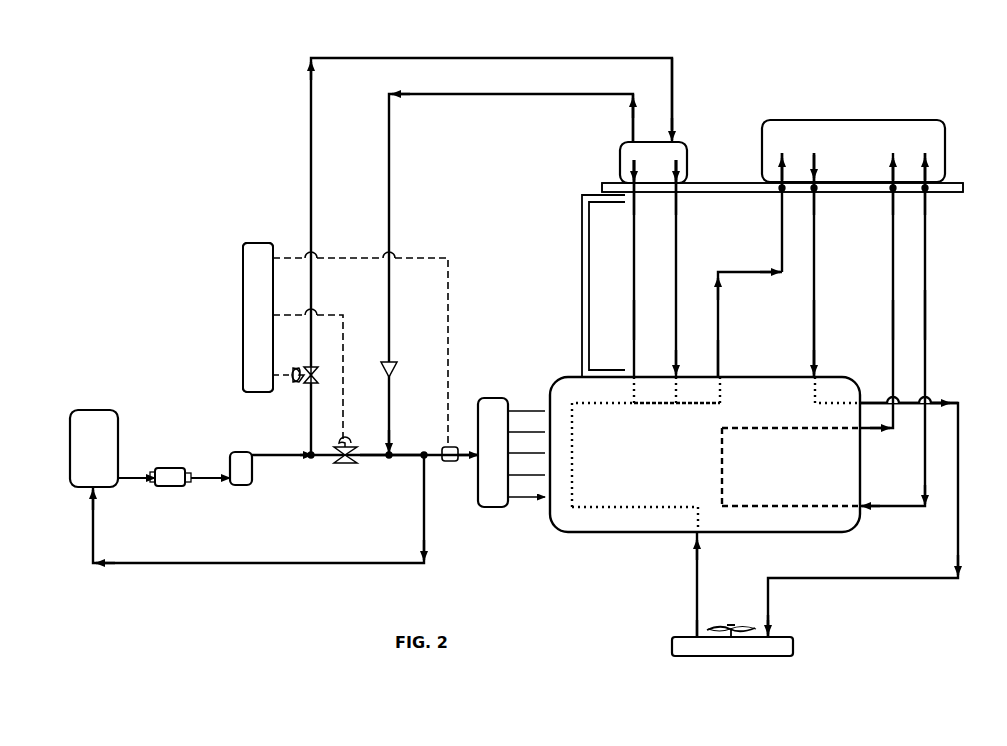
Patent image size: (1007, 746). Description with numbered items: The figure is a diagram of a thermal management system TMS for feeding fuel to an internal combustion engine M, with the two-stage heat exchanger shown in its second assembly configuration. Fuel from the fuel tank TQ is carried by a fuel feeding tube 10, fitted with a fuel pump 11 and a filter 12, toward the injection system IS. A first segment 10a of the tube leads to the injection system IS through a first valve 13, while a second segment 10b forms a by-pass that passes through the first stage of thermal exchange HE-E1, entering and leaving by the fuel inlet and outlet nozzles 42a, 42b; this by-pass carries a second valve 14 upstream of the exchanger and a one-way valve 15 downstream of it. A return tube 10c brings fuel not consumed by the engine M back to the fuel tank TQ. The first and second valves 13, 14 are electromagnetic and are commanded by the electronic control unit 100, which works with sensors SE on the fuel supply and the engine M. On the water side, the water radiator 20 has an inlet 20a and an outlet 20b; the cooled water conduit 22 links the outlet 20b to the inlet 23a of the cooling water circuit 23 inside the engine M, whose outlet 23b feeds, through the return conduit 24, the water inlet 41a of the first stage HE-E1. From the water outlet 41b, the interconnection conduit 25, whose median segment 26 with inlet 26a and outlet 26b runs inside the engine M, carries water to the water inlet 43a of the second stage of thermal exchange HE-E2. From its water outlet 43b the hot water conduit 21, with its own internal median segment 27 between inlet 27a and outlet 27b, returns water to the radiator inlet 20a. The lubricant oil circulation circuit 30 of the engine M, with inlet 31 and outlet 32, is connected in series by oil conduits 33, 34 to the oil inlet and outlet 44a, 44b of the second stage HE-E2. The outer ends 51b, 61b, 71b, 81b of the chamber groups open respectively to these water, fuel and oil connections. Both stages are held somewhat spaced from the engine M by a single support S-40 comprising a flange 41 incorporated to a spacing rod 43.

The thermal management system TMS is at (272, 208).
The electronic control unit 100 is at (240, 255).
The fuel tank TQ is at (100, 405).
The fuel pump 11 is at (170, 465).
The filter 12 is at (228, 455).
The fuel feeding tube 10 is at (280, 465).
The first segment 10a is at (376, 462).
The second segment 10b is at (345, 60).
The return tube 10c is at (212, 560).
The first valve 13 is at (346, 468).
The second valve 14 is at (302, 386).
The one-way valve 15 is at (398, 370).
The sensors SE is at (450, 464).
The injection system IS is at (496, 510).
The engine M is at (578, 540).
The water radiator 20 is at (668, 652).
The inlet of the water radiator 20a is at (772, 624).
The outlet of the water radiator 20b is at (692, 632).
The hot water conduit 21 is at (812, 292).
The cooled water conduit 22 is at (705, 578).
The cooling water circuit 23 is at (574, 452).
The inlet of the cooling water circuit 23a is at (692, 536).
The outlet of the cooling water circuit 23b is at (638, 375).
The return conduit 24 is at (632, 304).
The interconnection conduit 25 is at (672, 285).
The median segment 26 is at (692, 412).
The inlet of the median segment 26a is at (680, 375).
The outlet of the median segment 26b is at (724, 378).
The median segment 27 is at (840, 400).
The inlet of the median segment 27a is at (810, 374).
The outlet of the median segment 27b is at (882, 400).
The lubricant oil circulation circuit 30 is at (800, 508).
The inlet of the lubricant oil circulation circuit 31 is at (865, 510).
The outlet of the lubricant oil circulation circuit 32 is at (866, 430).
The oil conduit 33 is at (930, 294).
The oil conduit 34 is at (890, 322).
The flange 41 is at (745, 182).
The water inlet of the first stage 41a is at (645, 192).
The water outlet of the first stage 41b is at (677, 192).
The fuel inlet nozzle 42a is at (670, 90).
The fuel outlet nozzle 42b is at (631, 112).
The spacing rod 43 is at (583, 288).
The water inlet of the second stage 43a is at (785, 192).
The water outlet of the second stage 43b is at (838, 205).
The oil inlet of the second stage 44a is at (890, 193).
The oil outlet of the second stage 44b is at (925, 193).
The outer end 51b is at (668, 180).
The outer end 61b is at (676, 154).
The outer end 71b is at (815, 178).
The outer end 81b is at (924, 178).
The support S-40 is at (588, 188).
The first stage of thermal exchange HE-E1 is at (618, 145).
The second stage of thermal exchange HE-E2 is at (958, 68).